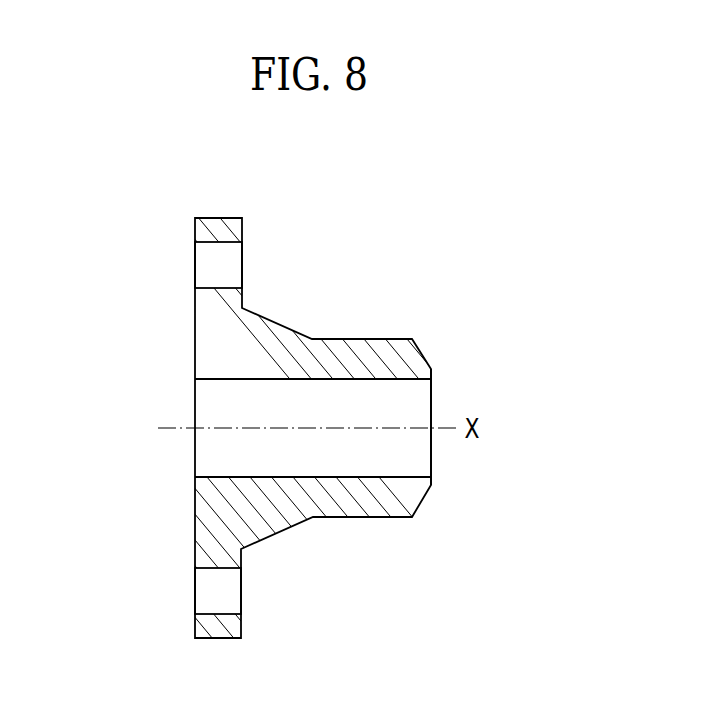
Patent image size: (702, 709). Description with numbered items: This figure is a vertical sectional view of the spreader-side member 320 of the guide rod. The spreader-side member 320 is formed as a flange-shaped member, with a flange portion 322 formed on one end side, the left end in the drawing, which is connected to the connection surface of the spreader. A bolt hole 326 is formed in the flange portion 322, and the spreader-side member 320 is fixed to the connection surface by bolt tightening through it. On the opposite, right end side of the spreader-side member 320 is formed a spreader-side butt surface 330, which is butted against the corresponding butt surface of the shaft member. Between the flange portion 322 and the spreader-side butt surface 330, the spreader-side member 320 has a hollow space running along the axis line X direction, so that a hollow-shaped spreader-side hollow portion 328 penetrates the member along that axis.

The spreader-side member 320 is at (333, 288).
The flange portion 322 is at (180, 258).
The bolt hole 326 is at (213, 613).
The spreader-side hollow portion 328 is at (296, 468).
The spreader-side butt surface 330 is at (432, 477).